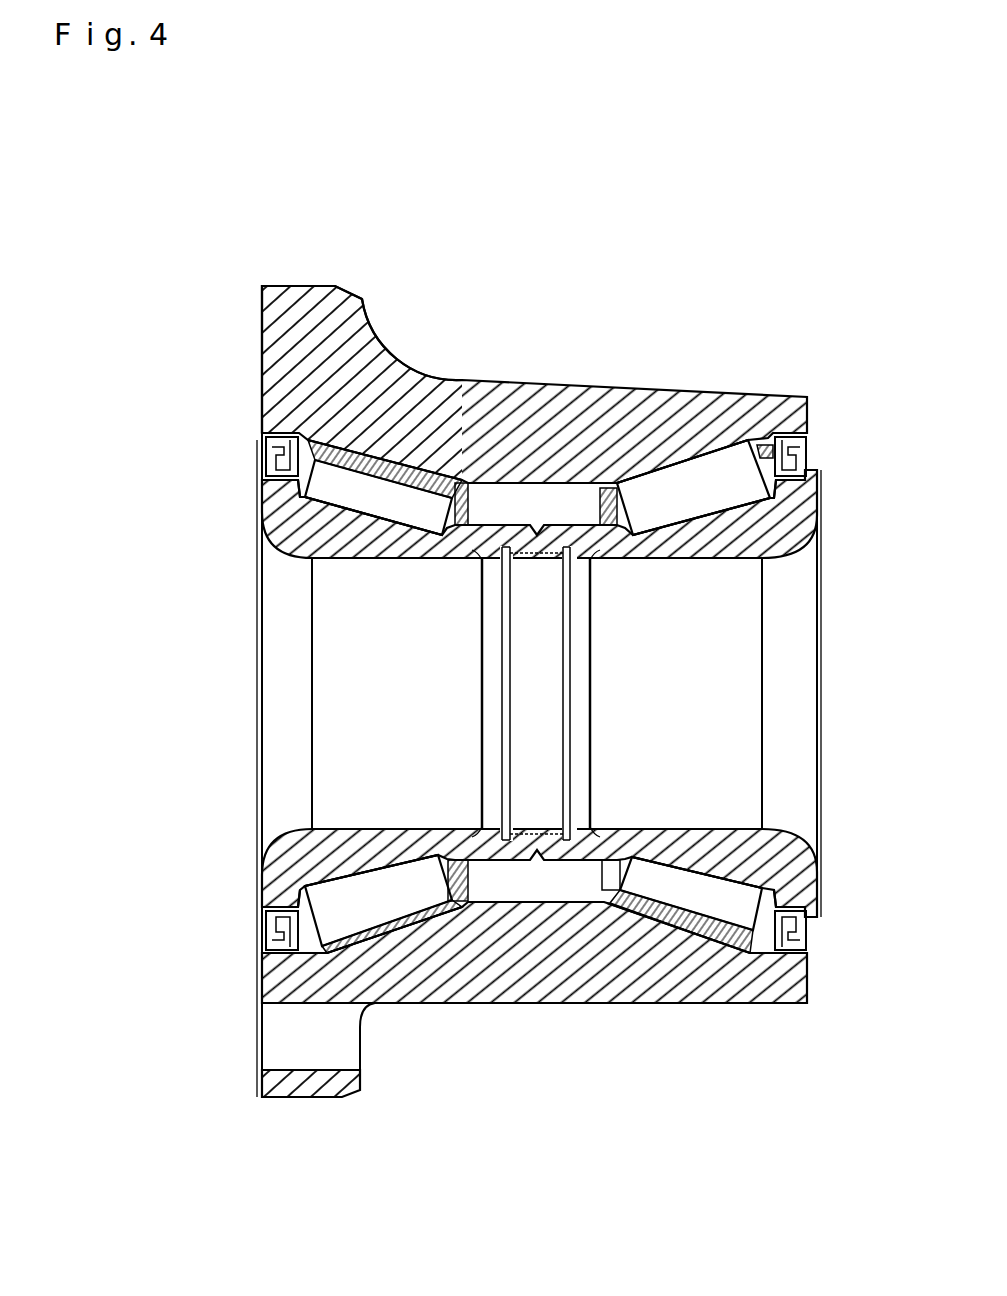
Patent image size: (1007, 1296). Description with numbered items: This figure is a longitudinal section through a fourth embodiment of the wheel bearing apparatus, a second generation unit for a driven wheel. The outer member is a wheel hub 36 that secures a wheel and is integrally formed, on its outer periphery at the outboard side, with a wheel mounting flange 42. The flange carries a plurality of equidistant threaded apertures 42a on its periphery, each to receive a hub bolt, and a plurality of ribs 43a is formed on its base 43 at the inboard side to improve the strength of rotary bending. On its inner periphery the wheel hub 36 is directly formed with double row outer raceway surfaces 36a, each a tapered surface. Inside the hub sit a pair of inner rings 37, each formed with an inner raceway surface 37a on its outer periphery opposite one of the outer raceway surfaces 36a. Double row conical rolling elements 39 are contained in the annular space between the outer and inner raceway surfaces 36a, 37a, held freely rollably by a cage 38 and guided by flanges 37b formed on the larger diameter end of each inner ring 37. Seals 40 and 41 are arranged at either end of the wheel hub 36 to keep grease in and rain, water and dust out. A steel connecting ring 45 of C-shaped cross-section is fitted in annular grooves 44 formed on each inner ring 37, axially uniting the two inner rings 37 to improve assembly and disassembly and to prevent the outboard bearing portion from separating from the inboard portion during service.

The wheel hub 36 is at (538, 400).
The outer raceway surface 36a is at (418, 478).
The inner ring 37 is at (300, 832).
The inner raceway surface 37a is at (352, 880).
The flange 37b is at (292, 484).
The cage 38 is at (635, 918).
The rolling element 39 is at (388, 876).
The seal 40 is at (272, 940).
The seal 41 is at (808, 935).
The wheel mounting flange 42 is at (287, 297).
The threaded aperture 42a is at (265, 1078).
The base 43 is at (372, 1012).
The rib 43a is at (372, 348).
The annular groove 44 is at (485, 565).
The connecting ring 45 is at (518, 664).